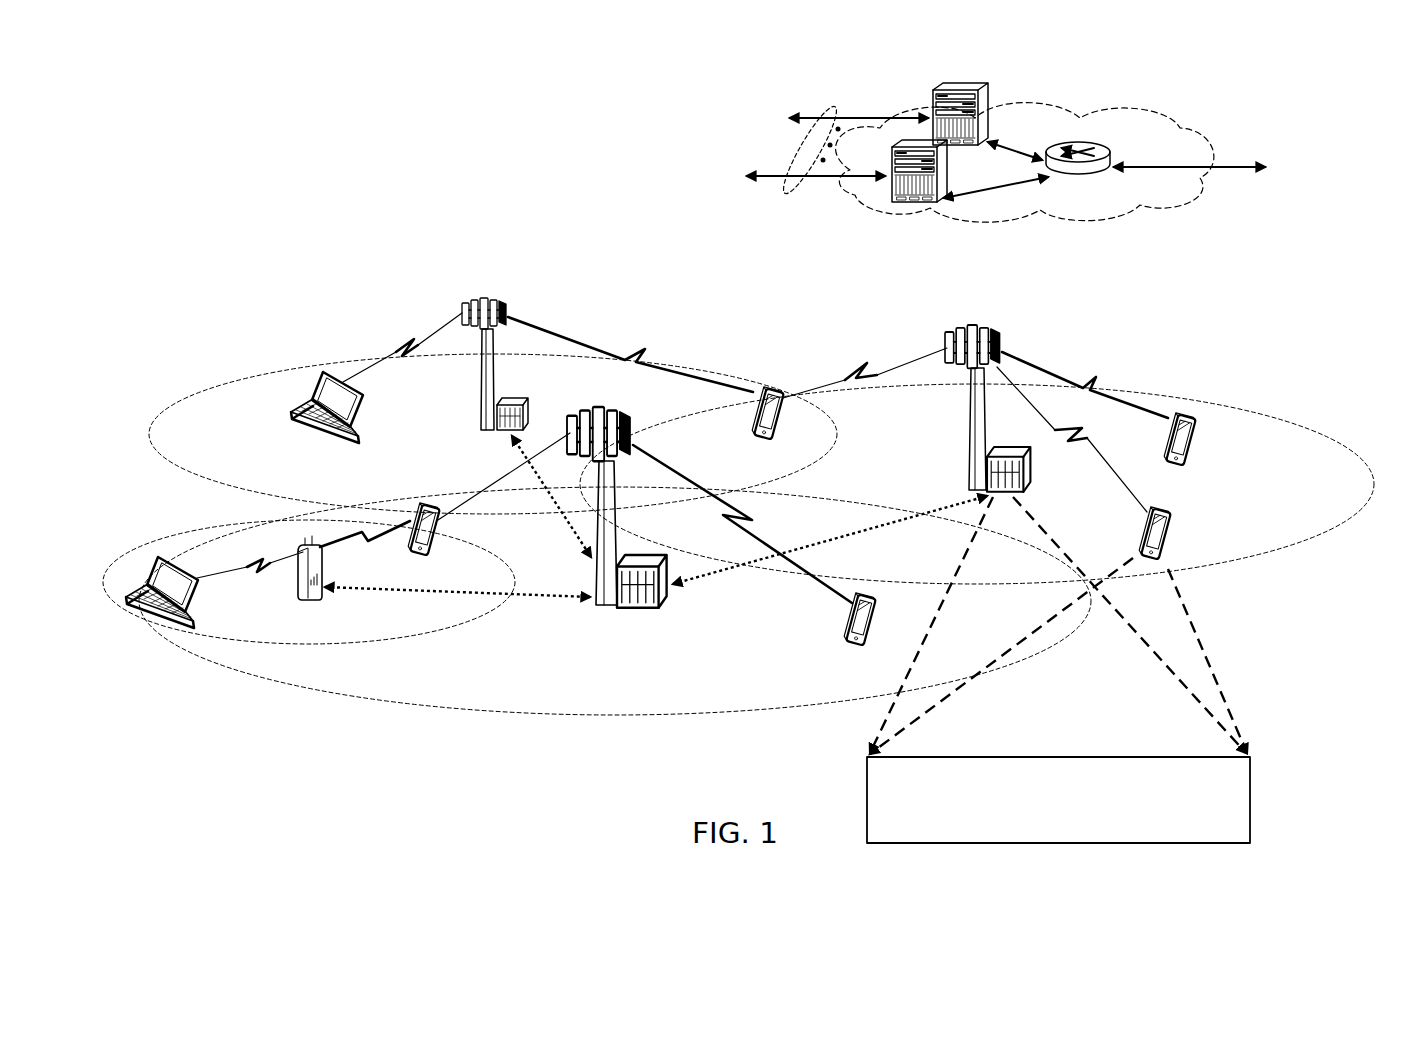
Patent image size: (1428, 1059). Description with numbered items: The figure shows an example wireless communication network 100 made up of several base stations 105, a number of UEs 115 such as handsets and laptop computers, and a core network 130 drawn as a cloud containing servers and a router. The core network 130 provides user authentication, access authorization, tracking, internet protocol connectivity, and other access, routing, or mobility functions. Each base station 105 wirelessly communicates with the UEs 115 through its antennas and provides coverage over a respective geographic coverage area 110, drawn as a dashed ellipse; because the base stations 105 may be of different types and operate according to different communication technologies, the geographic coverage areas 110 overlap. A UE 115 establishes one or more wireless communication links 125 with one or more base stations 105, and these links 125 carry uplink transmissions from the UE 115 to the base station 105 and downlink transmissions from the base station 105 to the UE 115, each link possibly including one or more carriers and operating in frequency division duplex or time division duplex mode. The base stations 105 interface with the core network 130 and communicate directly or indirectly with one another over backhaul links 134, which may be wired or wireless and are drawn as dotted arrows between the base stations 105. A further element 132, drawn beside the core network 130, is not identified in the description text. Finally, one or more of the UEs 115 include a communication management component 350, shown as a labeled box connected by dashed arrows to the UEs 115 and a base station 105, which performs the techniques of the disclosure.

The wireless communication network 100 is at (1293, 803).
The base station 105 is at (482, 413).
The geographic coverage area 110 is at (183, 467).
The UE 115 is at (311, 437).
The wireless communication link 125 is at (397, 347).
The core network 130 is at (1047, 220).
The backhaul link 132 is at (785, 192).
The backhaul link 134 is at (547, 487).
The communication management component 350 is at (1043, 814).